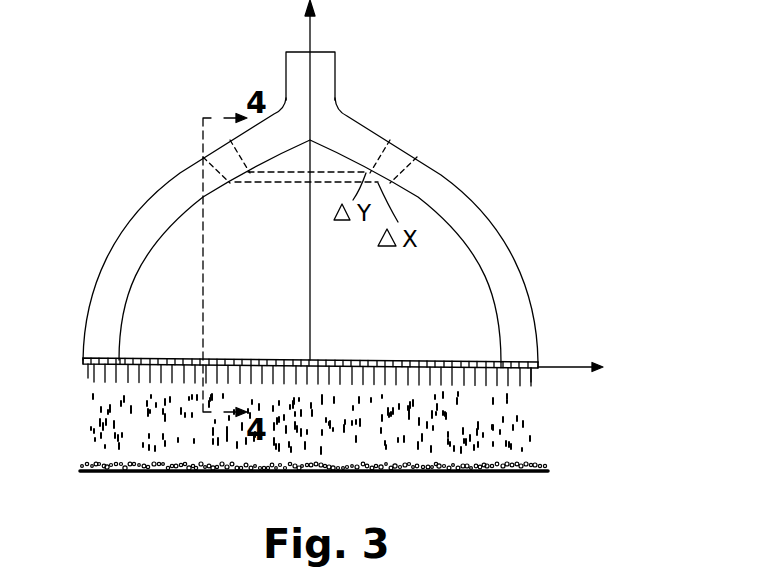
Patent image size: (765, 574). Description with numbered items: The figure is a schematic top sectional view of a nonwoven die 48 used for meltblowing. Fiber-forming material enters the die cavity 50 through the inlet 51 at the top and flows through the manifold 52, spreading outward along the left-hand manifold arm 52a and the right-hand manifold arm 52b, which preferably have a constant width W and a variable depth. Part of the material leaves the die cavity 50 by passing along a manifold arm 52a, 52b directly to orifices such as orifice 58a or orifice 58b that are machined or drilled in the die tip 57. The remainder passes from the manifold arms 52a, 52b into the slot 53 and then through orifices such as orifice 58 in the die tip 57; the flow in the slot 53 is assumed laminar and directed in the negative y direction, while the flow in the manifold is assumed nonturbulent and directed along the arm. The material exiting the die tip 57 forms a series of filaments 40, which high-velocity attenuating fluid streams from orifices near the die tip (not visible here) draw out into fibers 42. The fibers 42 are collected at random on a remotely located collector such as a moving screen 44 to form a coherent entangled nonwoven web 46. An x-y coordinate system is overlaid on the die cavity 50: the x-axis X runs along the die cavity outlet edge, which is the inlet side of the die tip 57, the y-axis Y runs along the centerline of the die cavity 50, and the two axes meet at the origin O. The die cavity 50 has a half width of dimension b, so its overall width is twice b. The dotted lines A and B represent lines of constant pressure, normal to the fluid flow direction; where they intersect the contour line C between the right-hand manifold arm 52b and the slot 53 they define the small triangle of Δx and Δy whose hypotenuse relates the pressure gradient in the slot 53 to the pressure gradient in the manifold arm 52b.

The filaments 40 is at (88, 377).
The fibers 42 is at (87, 413).
The moving screen 44 is at (502, 473).
The nonwoven web 46 is at (528, 465).
The nonwoven die 48 is at (462, 138).
The die cavity 50 is at (502, 236).
The inlet 51 is at (320, 50).
The manifold 52 is at (320, 112).
The manifold arm 52a is at (145, 217).
The manifold arm 52b is at (508, 292).
The slot 53 is at (400, 303).
The die tip 57 is at (484, 370).
The orifice 58 is at (133, 357).
The orifice 58a is at (100, 358).
The orifice 58b is at (518, 360).
The wall thickness W is at (490, 211).
The half width b is at (538, 360).
The x-axis X is at (568, 373).
The y-axis Y is at (308, 280).
The origin O is at (310, 358).
The dotted line A is at (290, 172).
The dotted line B is at (260, 184).
The contour line C is at (447, 235).